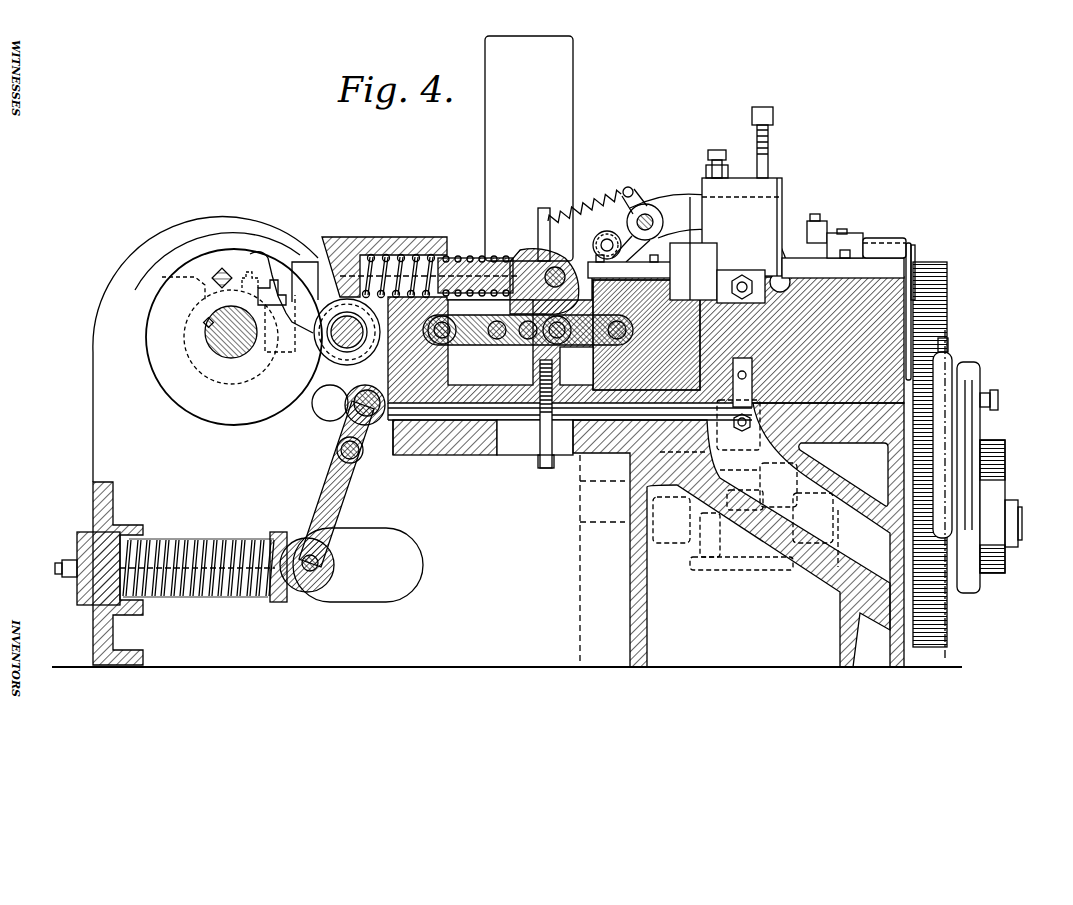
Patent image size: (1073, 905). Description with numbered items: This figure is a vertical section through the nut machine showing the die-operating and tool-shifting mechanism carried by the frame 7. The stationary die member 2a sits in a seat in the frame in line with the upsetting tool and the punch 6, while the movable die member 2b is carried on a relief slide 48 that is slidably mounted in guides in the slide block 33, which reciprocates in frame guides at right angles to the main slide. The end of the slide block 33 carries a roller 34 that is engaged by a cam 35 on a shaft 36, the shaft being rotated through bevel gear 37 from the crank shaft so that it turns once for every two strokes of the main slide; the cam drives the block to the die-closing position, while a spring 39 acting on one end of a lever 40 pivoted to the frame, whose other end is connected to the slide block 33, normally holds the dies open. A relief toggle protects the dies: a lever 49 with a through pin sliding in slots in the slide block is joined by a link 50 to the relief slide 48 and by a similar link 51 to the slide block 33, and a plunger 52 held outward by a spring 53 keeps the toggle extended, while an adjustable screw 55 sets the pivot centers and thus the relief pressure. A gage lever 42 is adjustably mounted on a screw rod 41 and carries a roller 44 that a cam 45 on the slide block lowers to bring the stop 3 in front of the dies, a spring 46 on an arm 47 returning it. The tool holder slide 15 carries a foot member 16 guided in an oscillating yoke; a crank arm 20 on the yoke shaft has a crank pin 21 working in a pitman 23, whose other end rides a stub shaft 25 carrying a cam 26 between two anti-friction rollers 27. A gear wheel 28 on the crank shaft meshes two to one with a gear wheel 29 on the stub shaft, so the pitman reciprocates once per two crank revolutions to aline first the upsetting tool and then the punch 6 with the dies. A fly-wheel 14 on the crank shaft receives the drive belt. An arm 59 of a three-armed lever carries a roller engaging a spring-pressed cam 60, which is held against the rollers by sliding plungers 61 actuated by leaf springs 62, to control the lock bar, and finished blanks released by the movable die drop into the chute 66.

The stationary die member 2a is at (843, 269).
The movable die member 2b is at (713, 321).
The stop 3 is at (775, 276).
The punch 6 is at (742, 394).
The frame 7 is at (93, 418).
The fly-wheel 14 is at (529, 148).
The tool holder slide 15 is at (768, 208).
The foot member 16 is at (726, 556).
The crank arm 20 is at (982, 434).
The crank pin 21 is at (996, 404).
The pitman 23 is at (975, 582).
The stub shaft 25 is at (1020, 520).
The cam 26 is at (1002, 506).
The anti-friction rollers 27 is at (1000, 468).
The gear wheel 28 is at (940, 316).
The gear wheel 29 is at (920, 438).
The slide block 33 is at (396, 380).
The roller 34 is at (334, 353).
The cam 35 is at (234, 337).
The shaft 36 is at (229, 350).
The bevel gear 37 is at (226, 230).
The spring 39 is at (212, 533).
The lever 40 is at (330, 497).
The screw rod 41 is at (648, 216).
The gage lever 42 is at (701, 234).
The roller 44 is at (606, 236).
The cam 45 is at (638, 268).
The spring 46 is at (592, 208).
The arm 47 is at (630, 187).
The relief slide 48 is at (646, 335).
The lever 49 is at (520, 346).
The link 50 is at (576, 346).
The link 51 is at (478, 346).
The plunger 52 is at (476, 270).
The spring 53 is at (415, 257).
The adjustable screw 55 is at (540, 402).
The arm 59 is at (830, 232).
The spring-pressed cam 60 is at (845, 246).
The sliding plungers 61 is at (909, 252).
The leaf springs 62 is at (918, 258).
The chute 66 is at (738, 535).